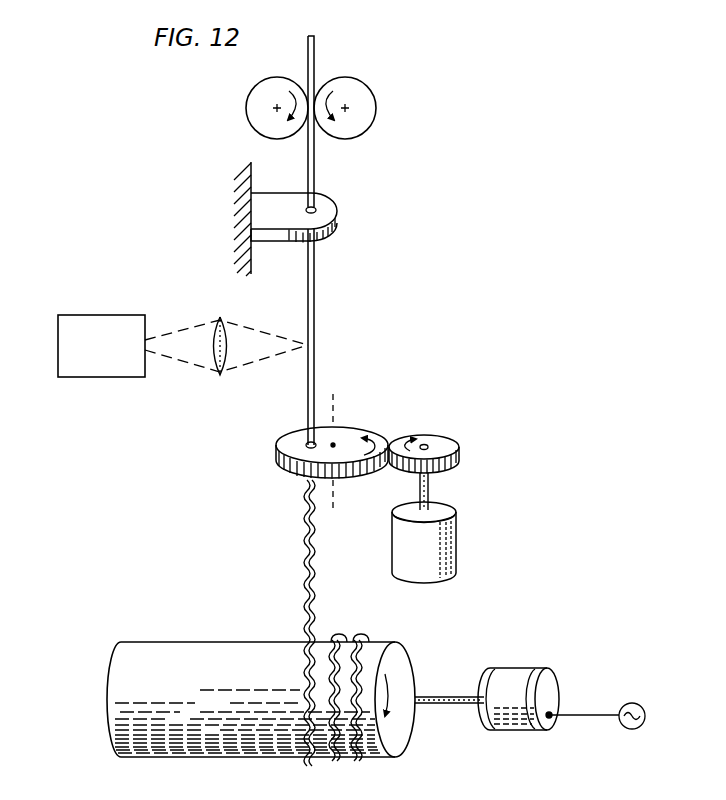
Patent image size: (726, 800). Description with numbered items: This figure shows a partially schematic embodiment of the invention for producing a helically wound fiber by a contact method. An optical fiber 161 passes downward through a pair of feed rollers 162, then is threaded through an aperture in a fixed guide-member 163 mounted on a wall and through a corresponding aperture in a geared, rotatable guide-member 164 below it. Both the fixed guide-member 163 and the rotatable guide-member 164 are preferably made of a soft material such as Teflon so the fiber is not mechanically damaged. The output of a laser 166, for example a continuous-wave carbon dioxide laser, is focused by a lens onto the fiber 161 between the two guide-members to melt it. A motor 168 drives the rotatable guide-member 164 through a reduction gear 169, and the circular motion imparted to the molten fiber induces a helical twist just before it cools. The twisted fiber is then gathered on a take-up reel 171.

The optical fiber 161 is at (314, 300).
The feed rollers 162 is at (247, 108).
The fixed guide-member 163 is at (338, 209).
The geared, rotatable guide-member 164 is at (276, 454).
The laser 166 is at (104, 377).
The motor 168 is at (457, 545).
The reduction gear 169 is at (460, 455).
The take-up reel 171 is at (168, 649).